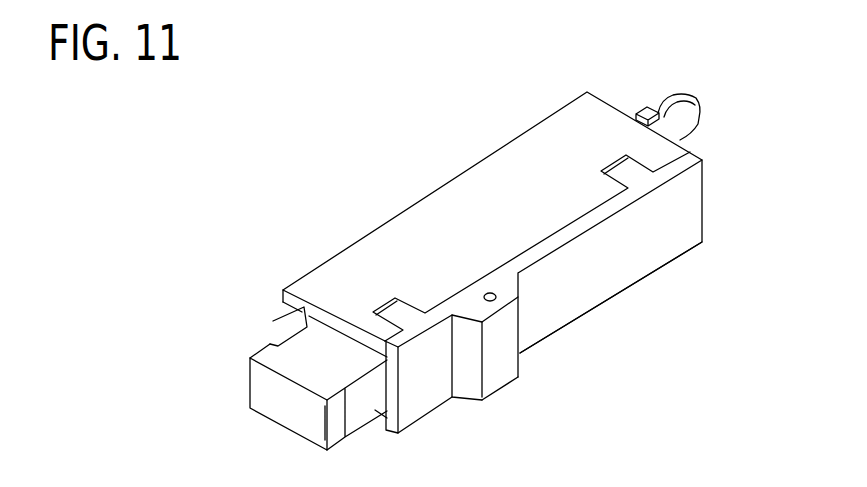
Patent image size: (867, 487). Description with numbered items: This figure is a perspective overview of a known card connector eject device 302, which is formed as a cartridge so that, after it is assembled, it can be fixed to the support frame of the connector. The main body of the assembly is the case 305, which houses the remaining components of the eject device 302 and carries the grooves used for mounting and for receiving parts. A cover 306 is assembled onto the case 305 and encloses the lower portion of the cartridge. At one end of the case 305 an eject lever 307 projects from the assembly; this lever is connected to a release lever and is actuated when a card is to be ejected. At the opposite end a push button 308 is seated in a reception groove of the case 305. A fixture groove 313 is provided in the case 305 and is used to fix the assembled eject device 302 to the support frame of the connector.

The eject device 302 is at (481, 152).
The case 305 is at (408, 218).
The cover 306 is at (612, 278).
The eject lever 307 is at (643, 108).
The push button 308 is at (246, 347).
The fixture groove 313 is at (273, 321).